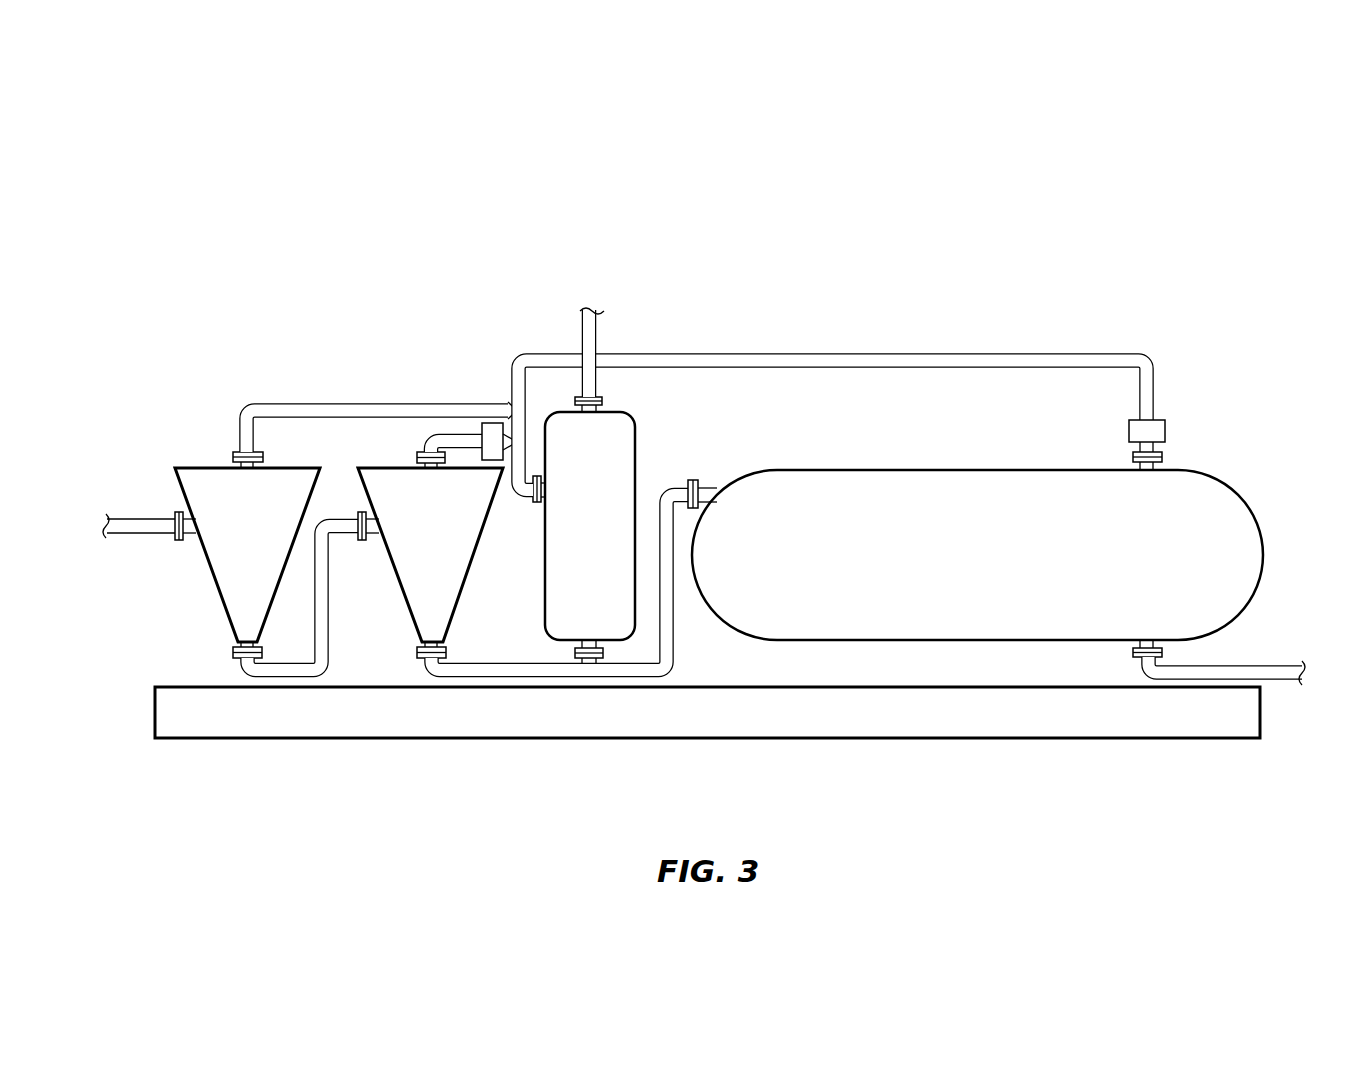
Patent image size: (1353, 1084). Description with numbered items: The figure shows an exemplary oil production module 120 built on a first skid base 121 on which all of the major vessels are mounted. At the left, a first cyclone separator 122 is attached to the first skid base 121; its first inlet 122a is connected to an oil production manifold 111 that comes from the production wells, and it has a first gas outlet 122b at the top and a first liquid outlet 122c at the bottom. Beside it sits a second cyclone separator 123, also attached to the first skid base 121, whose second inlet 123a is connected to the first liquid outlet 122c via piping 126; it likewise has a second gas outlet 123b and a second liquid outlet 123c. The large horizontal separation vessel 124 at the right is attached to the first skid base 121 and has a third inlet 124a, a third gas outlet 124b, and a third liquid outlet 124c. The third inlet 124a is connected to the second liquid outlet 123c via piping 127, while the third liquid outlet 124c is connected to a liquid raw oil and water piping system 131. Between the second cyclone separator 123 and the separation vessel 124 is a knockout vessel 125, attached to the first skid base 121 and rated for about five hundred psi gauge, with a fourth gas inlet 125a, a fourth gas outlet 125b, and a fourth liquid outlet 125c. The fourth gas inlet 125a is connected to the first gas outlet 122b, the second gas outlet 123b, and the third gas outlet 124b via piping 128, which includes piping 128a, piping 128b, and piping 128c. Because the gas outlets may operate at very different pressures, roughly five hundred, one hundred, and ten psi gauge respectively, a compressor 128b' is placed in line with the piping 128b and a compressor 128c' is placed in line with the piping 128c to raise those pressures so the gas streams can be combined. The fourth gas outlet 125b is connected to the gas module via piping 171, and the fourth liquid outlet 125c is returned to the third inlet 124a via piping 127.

The oil production module 120 is at (1132, 236).
The oil production manifold 111 is at (137, 522).
The first skid base 121 is at (293, 720).
The first cyclone separator 122 is at (241, 542).
The first inlet 122a is at (188, 542).
The first gas outlet 122b is at (255, 465).
The first liquid outlet 122c is at (233, 643).
The second cyclone separator 123 is at (437, 512).
The second inlet 123a is at (367, 542).
The second gas outlet 123b is at (418, 463).
The second liquid outlet 123c is at (445, 643).
The separation vessel 124 is at (975, 549).
The third inlet 124a is at (705, 492).
The third gas outlet 124b is at (1155, 465).
The third liquid outlet 124c is at (1133, 652).
The knockout vessel 125 is at (590, 522).
The fourth gas inlet 125a is at (536, 504).
The fourth gas outlet 125b is at (604, 410).
The fourth liquid outlet 125c is at (577, 646).
The piping 126 is at (322, 625).
The piping 127 is at (670, 642).
The piping 128 is at (874, 313).
The piping 128a is at (283, 404).
The piping 128b is at (419, 392).
The compressor 128b' is at (457, 381).
The piping 128c is at (833, 391).
The compressor 128c' is at (1199, 402).
The liquid raw oil and water piping system 131 is at (1258, 672).
The piping 171 is at (587, 340).